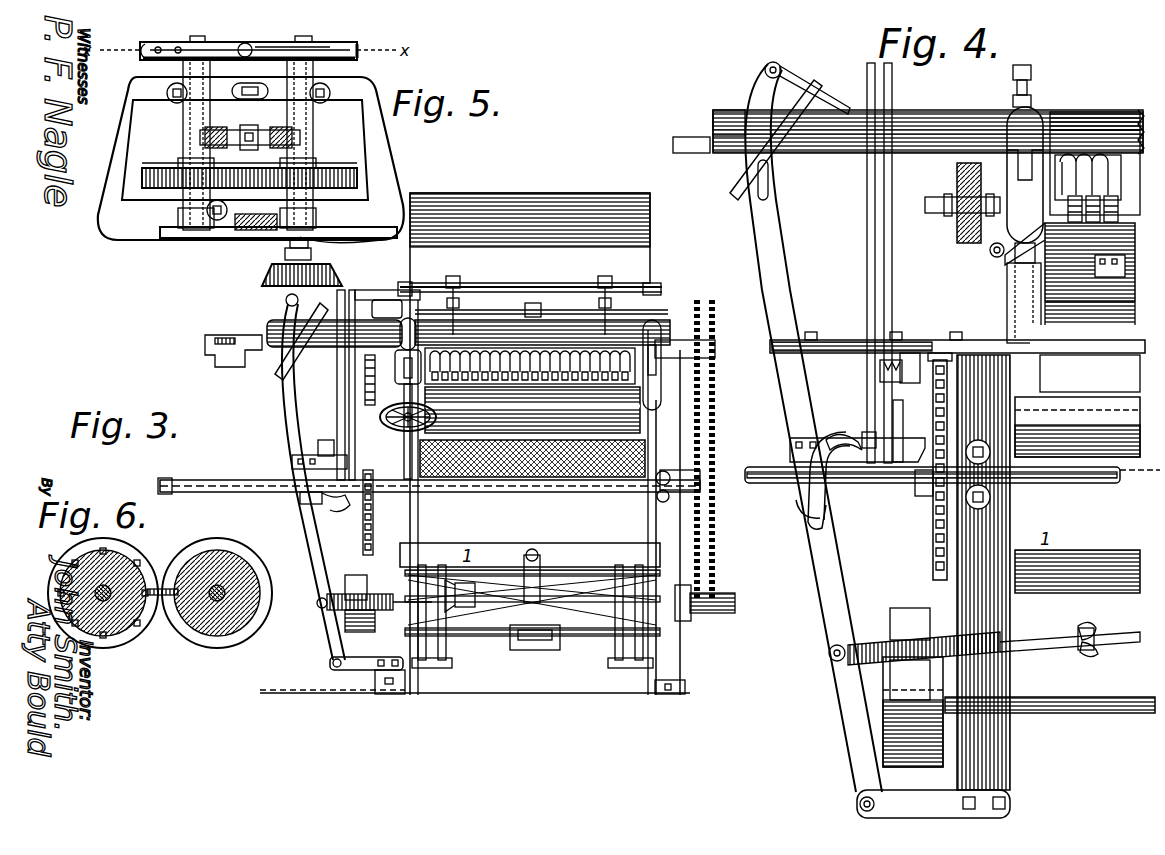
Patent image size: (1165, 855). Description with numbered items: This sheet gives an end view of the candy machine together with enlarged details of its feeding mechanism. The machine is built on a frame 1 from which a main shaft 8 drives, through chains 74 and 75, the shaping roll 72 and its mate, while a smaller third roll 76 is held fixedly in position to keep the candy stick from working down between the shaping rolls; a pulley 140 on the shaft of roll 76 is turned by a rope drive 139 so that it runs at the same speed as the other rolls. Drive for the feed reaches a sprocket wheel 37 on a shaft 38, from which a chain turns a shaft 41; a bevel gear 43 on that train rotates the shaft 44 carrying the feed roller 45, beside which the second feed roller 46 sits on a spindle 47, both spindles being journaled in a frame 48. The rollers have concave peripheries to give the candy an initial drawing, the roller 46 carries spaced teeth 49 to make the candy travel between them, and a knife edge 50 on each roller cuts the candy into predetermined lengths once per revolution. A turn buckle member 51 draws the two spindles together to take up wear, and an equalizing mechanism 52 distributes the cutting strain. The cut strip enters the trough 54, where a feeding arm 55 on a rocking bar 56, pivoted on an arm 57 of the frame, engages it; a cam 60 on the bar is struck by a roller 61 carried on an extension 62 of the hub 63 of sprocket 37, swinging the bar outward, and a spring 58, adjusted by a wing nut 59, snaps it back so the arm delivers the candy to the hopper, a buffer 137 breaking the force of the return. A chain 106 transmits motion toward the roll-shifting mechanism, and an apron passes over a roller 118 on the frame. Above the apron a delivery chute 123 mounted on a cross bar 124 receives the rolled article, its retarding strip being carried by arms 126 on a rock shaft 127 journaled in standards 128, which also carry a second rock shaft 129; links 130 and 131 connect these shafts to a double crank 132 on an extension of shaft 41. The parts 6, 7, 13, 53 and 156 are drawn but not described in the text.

In FIG. 3, the frame 1 is at (475, 444).
In FIG. 4, the frame 1 is at (1048, 572).
In FIG. 4, the bracket 6 is at (885, 696).
In FIG. 4, the slide block 7 is at (913, 712).
In FIG. 3, the main shaft 8 is at (722, 614).
In FIG. 4, the main shaft 8 is at (1070, 714).
In FIG. 3, the bar 13 is at (610, 580).
In FIG. 3, the sprocket wheel 37 is at (362, 512).
In FIG. 4, the sprocket wheel 37 is at (933, 390).
In FIG. 3, the shaft 38 is at (220, 480).
In FIG. 4, the shaft 38 is at (776, 483).
In FIG. 3, the shaft 41 is at (172, 480).
In FIG. 5, the bevel gear 43 is at (272, 268).
In FIG. 5, the shaft 44 is at (308, 198).
In FIG. 6, the shaft 44 is at (222, 592).
In FIG. 5, the feed roller 45 is at (312, 46).
In FIG. 6, the feed roller 45 is at (222, 570).
In FIG. 5, the second feed roller 46 is at (214, 44).
In FIG. 6, the second feed roller 46 is at (135, 622).
In FIG. 5, the spindle 47 is at (183, 130).
In FIG. 6, the spindle 47 is at (103, 600).
In FIG. 5, the frame 48 is at (392, 178).
In FIG. 5, the teeth 49 is at (178, 46).
In FIG. 6, the teeth 49 is at (75, 562).
In FIG. 5, the knife edge 50 is at (142, 56).
In FIG. 6, the knife edge 50 is at (172, 588).
In FIG. 5, the turn buckle member 51 is at (250, 128).
In FIG. 5, the equalizing mechanism 52 is at (322, 168).
In FIG. 4, the block 53 is at (680, 140).
In FIG. 4, the trough 54 is at (728, 112).
In FIG. 3, the feeding arm 55 is at (318, 306).
In FIG. 4, the feeding arm 55 is at (800, 62).
In FIG. 3, the rocking bar 56 is at (290, 388).
In FIG. 4, the rocking bar 56 is at (776, 282).
In FIG. 3, the arm 57 is at (358, 672).
In FIG. 4, the arm 57 is at (933, 804).
In FIG. 3, the spring 58 is at (330, 608).
In FIG. 4, the spring 58 is at (876, 638).
In FIG. 3, the wing nut 59 is at (464, 608).
In FIG. 4, the wing nut 59 is at (1088, 652).
In FIG. 3, the cam 60 is at (322, 500).
In FIG. 4, the cam 60 is at (808, 518).
In FIG. 3, the roller 61 is at (292, 460).
In FIG. 4, the roller 61 is at (900, 446).
In FIG. 3, the extension 62 is at (300, 498).
In FIG. 4, the extension 62 is at (912, 464).
In FIG. 4, the hub 63 is at (924, 496).
In FIG. 4, the roll 72 is at (1112, 172).
In FIG. 3, the chain 74 is at (716, 440).
In FIG. 3, the chain 75 is at (702, 410).
In FIG. 3, the third roll 76 is at (478, 384).
In FIG. 4, the third roll 76 is at (1118, 212).
In FIG. 3, the chain 106 is at (700, 526).
In FIG. 4, the chain 106 is at (800, 510).
In FIG. 4, the roller 118 is at (1077, 427).
In FIG. 4, the delivery chute 123 is at (1087, 323).
In FIG. 3, the cross bar 124 is at (540, 400).
In FIG. 4, the cross bar 124 is at (1086, 270).
In FIG. 3, the arms 126 is at (462, 310).
In FIG. 3, the rock shaft 127 is at (540, 292).
In FIG. 3, the standards 128 is at (412, 296).
In FIG. 3, the second rock shaft 129 is at (507, 318).
In FIG. 3, the link 130 is at (338, 362).
In FIG. 4, the link 130 is at (867, 194).
In FIG. 3, the link 131 is at (350, 392).
In FIG. 4, the link 131 is at (884, 240).
In FIG. 4, the double crank 132 is at (858, 438).
In FIG. 3, the spring or buffer 137 is at (318, 446).
In FIG. 4, the spring or buffer 137 is at (880, 368).
In FIG. 3, the rope drive 139 is at (372, 292).
In FIG. 4, the rope drive 139 is at (970, 245).
In FIG. 3, the pulley 140 is at (392, 408).
In FIG. 4, the pulley 140 is at (958, 236).
In FIG. 3, the bar 156 is at (268, 330).